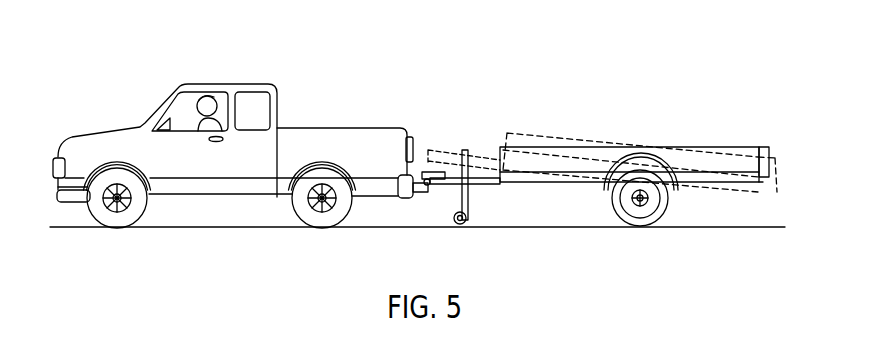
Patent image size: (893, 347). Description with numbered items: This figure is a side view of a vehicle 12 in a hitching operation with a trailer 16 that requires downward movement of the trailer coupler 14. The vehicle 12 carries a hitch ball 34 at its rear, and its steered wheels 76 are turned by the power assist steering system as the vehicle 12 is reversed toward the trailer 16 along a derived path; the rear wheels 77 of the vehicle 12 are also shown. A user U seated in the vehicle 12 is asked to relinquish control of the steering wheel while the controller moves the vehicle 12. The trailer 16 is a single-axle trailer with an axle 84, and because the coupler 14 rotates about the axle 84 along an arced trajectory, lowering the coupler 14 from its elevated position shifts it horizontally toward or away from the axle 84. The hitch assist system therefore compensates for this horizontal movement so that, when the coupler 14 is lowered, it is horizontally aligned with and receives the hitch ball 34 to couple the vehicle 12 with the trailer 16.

The vehicle 12 is at (300, 65).
The coupler 14 is at (426, 172).
The trailer 16 is at (627, 115).
The hitch ball 34 is at (423, 187).
The steered wheels 76 is at (113, 218).
The vehicle rear wheel 77 is at (321, 218).
The axle 84 is at (643, 201).
The user U is at (204, 94).